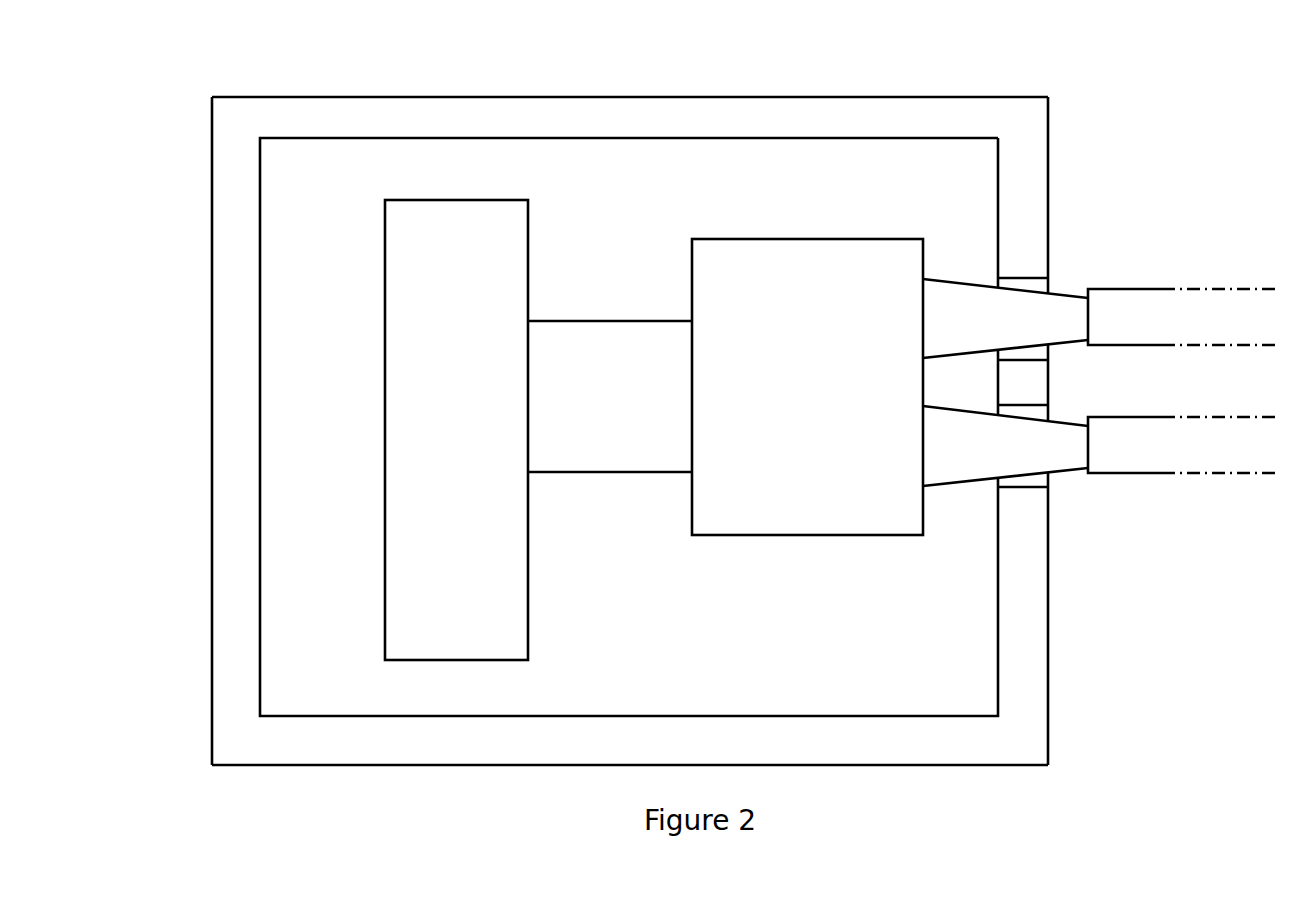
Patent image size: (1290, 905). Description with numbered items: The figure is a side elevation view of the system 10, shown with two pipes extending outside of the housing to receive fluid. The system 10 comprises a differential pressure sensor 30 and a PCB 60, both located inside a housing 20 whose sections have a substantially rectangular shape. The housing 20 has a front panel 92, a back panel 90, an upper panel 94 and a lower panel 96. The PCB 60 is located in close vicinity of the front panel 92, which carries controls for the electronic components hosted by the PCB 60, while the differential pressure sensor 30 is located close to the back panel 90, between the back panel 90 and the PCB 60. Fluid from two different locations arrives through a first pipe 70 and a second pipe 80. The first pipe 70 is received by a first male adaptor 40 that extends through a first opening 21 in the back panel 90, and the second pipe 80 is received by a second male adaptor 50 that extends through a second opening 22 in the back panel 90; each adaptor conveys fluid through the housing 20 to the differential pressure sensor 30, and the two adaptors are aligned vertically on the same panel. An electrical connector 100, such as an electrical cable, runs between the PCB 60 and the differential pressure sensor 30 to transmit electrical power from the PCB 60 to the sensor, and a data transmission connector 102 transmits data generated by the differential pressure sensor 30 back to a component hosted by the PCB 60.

The system 10 is at (322, 55).
The housing 20 is at (222, 134).
The first opening 21 is at (1027, 277).
The second opening 22 is at (1012, 489).
The differential pressure sensor 30 is at (801, 508).
The first male adaptor 40 is at (985, 328).
The second male adaptor 50 is at (985, 455).
The PCB 60 is at (446, 641).
The first pipe 70 is at (1149, 328).
The second pipe 80 is at (1149, 455).
The back panel 90 is at (631, 432).
The front panel 92 is at (212, 242).
The upper panel 94 is at (862, 97).
The lower panel 96 is at (845, 766).
The electrical connector 100 is at (620, 321).
The data transmission connector 102 is at (628, 472).